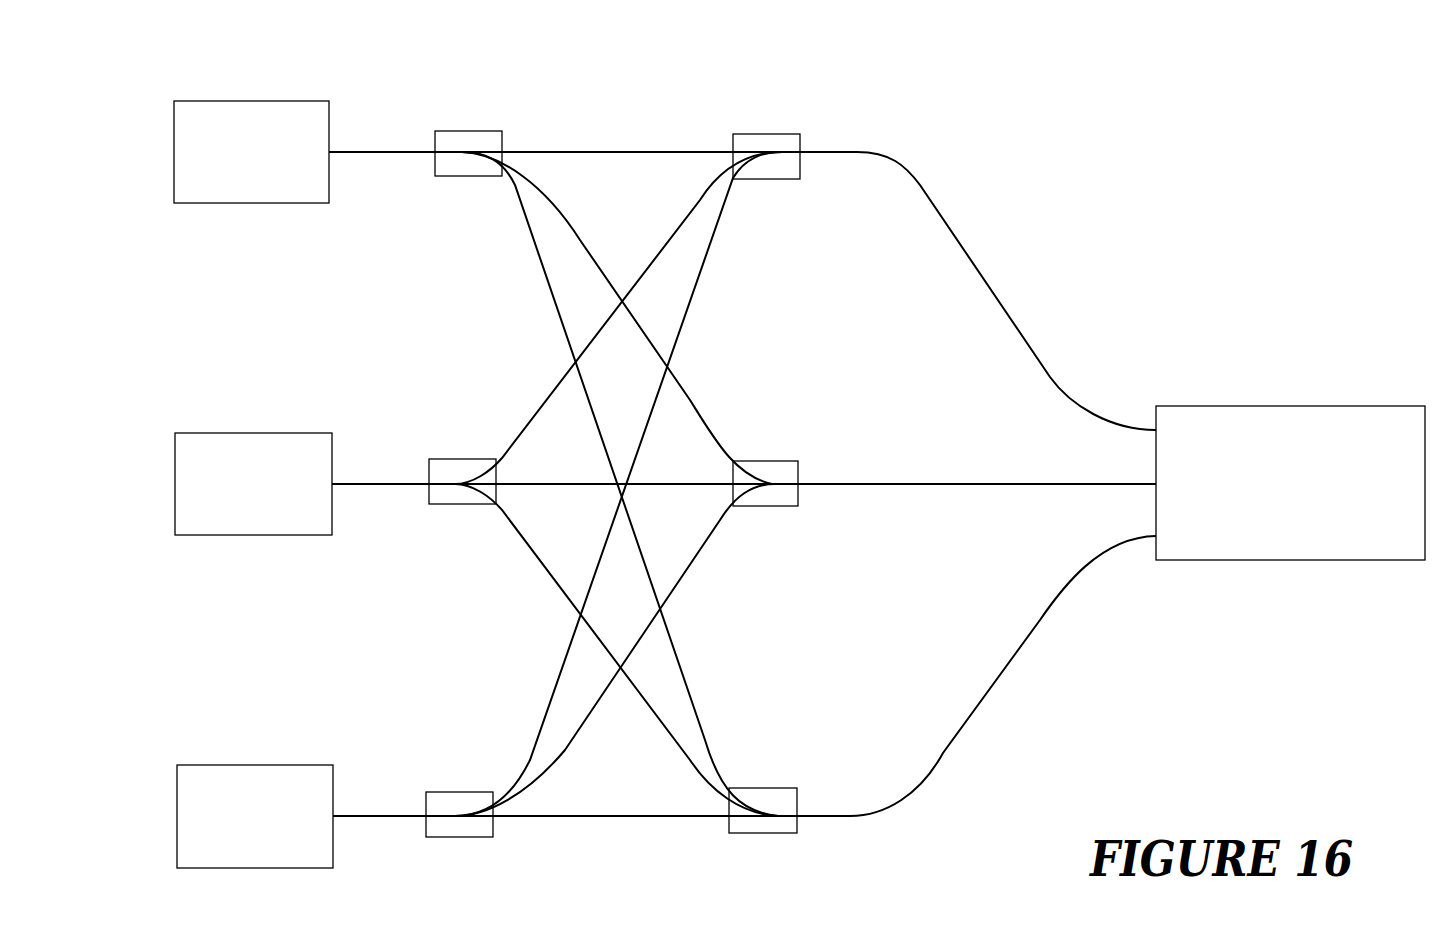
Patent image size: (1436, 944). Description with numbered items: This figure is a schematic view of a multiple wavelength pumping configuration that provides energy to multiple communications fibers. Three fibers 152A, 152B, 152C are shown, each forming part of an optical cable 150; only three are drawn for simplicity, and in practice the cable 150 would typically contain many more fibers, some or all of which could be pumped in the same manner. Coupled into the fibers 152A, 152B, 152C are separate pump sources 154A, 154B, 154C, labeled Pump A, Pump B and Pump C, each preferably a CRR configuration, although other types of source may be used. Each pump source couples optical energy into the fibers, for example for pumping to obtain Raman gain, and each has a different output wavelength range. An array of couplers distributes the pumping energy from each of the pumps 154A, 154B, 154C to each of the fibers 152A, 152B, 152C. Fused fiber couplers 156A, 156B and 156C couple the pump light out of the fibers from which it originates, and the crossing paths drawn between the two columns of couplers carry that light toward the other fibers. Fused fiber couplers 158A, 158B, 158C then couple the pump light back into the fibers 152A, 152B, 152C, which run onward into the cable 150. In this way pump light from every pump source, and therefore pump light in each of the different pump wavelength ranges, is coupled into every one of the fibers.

The optical cable 150 is at (1320, 402).
The fiber 152A is at (867, 147).
The fiber 152B is at (868, 478).
The fiber 152C is at (858, 810).
The pump source 154A is at (258, 95).
The pump source 154B is at (267, 425).
The pump source 154C is at (273, 757).
The fused fiber coupler 156A is at (482, 127).
The fused fiber coupler 156B is at (473, 453).
The fused fiber coupler 156C is at (465, 787).
The fused fiber coupler 158A is at (758, 131).
The fused fiber coupler 158B is at (758, 453).
The fused fiber coupler 158C is at (760, 787).